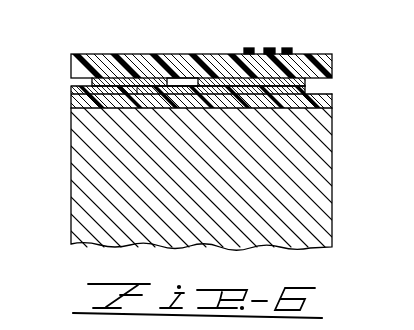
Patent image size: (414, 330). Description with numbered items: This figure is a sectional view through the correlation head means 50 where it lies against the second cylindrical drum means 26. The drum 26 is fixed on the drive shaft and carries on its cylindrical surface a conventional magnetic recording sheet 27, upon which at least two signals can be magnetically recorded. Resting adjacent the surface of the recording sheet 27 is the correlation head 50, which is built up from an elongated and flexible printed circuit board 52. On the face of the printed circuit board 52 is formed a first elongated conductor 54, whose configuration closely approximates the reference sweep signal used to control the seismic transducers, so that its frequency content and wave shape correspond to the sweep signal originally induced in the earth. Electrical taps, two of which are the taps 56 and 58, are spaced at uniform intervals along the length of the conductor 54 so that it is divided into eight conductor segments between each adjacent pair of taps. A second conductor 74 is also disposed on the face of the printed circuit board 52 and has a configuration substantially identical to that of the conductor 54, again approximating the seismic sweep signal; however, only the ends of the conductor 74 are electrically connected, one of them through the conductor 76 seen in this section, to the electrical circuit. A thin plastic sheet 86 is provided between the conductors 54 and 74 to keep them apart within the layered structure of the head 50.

The correlation head means 50 is at (60, 40).
The printed circuit board 52 is at (82, 68).
The magnetic recording sheet 27 is at (78, 98).
The second conductor 74 is at (140, 88).
The second cylindrical drum means 26 is at (88, 166).
The electrical tap 56 is at (254, 48).
The electrical tap 58 is at (284, 29).
The conductor 76 is at (285, 49).
The thin plastic sheet 86 is at (320, 90).
The first elongated conductor 54 is at (285, 90).